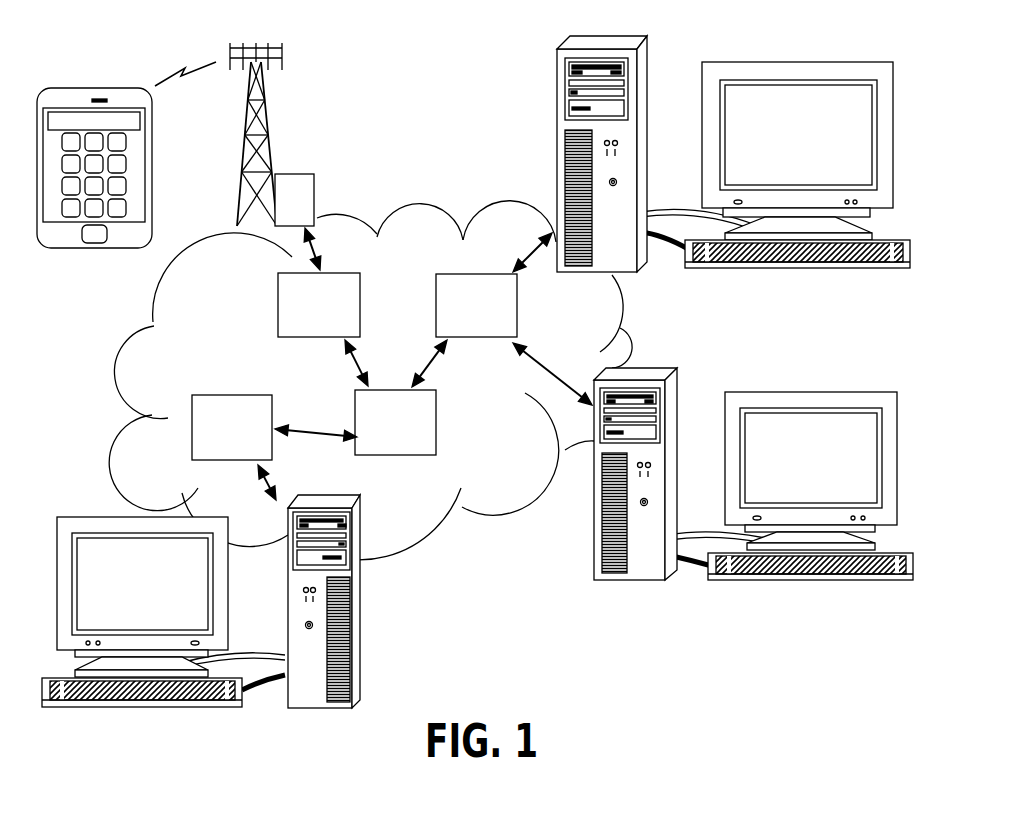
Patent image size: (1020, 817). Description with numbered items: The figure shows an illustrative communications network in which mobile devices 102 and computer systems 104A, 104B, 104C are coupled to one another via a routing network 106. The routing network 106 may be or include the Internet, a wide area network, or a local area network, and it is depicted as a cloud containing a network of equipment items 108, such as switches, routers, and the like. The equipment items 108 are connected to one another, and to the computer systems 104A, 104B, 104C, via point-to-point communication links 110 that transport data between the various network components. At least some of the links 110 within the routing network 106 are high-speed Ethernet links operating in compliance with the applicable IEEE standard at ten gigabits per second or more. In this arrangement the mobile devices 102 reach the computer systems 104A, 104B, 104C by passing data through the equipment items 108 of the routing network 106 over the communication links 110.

The mobile device 102 is at (126, 173).
The computer system 104A is at (647, 88).
The computer system 104B is at (677, 417).
The computer system 104C is at (360, 662).
The routing network 106 is at (500, 455).
The equipment item 108 is at (338, 272).
The point-to-point communication link 110 is at (530, 258).